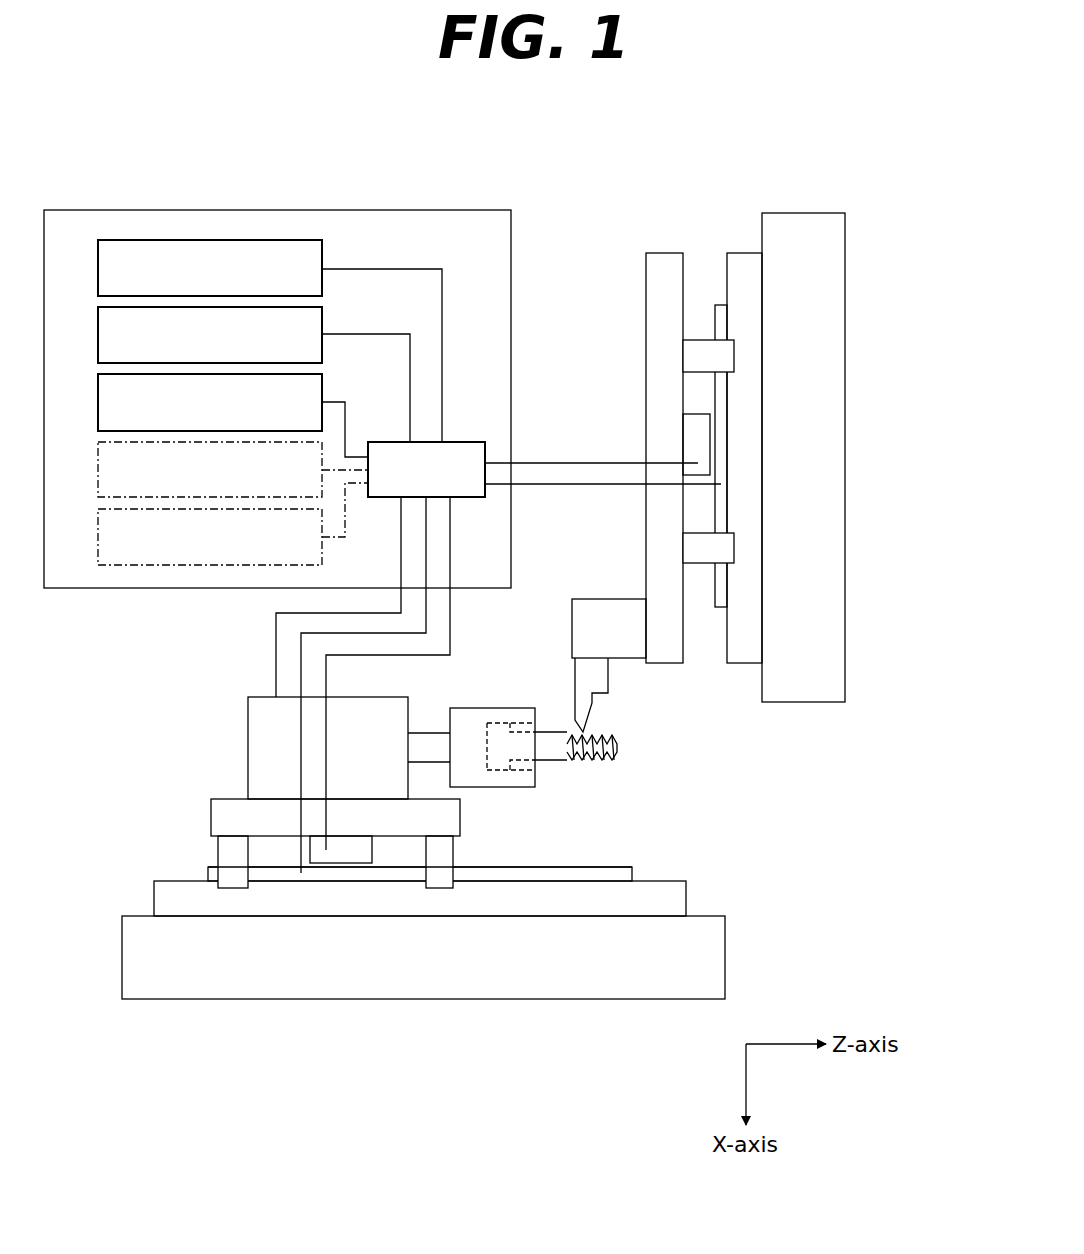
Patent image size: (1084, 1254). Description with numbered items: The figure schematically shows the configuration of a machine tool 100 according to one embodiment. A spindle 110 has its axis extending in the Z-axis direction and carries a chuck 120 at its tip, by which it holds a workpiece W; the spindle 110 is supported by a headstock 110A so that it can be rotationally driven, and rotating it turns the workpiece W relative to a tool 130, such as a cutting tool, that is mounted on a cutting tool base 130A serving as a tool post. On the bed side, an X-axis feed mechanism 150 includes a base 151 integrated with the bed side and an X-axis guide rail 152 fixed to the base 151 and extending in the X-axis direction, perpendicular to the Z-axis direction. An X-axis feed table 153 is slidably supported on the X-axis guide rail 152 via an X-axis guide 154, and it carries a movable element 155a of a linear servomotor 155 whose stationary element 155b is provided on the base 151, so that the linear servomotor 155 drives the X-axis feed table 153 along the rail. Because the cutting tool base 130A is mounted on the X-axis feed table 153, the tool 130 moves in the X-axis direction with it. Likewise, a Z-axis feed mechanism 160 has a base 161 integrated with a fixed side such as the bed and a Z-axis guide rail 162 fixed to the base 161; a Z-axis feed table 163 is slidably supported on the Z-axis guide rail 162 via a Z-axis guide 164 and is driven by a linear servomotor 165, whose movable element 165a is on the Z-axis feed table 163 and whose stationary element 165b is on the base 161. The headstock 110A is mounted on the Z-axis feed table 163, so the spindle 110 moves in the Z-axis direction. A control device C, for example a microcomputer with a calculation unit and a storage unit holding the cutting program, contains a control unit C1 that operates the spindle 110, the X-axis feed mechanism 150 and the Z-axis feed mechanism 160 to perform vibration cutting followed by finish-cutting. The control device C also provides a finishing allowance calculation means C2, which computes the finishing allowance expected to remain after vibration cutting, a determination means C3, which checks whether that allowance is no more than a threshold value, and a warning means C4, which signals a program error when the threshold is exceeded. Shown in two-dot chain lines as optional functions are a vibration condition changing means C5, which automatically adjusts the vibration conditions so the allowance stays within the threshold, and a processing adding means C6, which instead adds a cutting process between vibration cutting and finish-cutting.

The machine tool 100 is at (278, 173).
The control device C is at (426, 210).
The control unit C1 is at (468, 442).
The finishing allowance calculation means C2 is at (98, 265).
The determination means C3 is at (98, 331).
The warning means C4 is at (98, 399).
The vibration condition changing means C5 is at (98, 466).
The processing adding means C6 is at (98, 533).
The spindle 110 is at (428, 742).
The headstock 110A is at (262, 741).
The chuck 120 is at (488, 715).
The workpiece W is at (582, 762).
The tool 130 is at (585, 705).
The cutting tool base 130A is at (608, 607).
The X-axis feed mechanism 150 is at (833, 135).
The base 151 is at (818, 222).
The X-axis guide rail 152 is at (743, 262).
The X-axis feed table 153 is at (658, 281).
The X-axis guide 154 is at (702, 348).
The linear servomotor 155 is at (828, 456).
The movable element 155a is at (700, 428).
The stationary element 155b is at (722, 462).
The Z-axis feed mechanism 160 is at (200, 1047).
The base 161 is at (595, 975).
The Z-axis guide rail 162 is at (673, 897).
The Z-axis feed table 163 is at (230, 817).
The Z-axis guide 164 is at (232, 853).
The linear servomotor 165 is at (420, 956).
The movable element 165a is at (352, 853).
The stationary element 165b is at (405, 873).